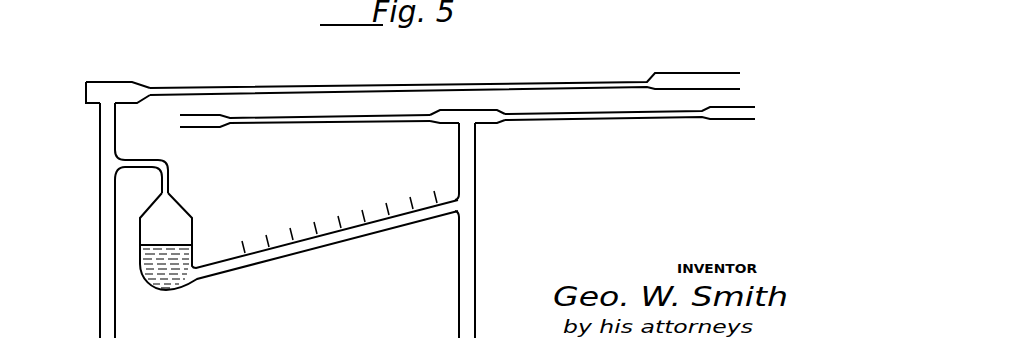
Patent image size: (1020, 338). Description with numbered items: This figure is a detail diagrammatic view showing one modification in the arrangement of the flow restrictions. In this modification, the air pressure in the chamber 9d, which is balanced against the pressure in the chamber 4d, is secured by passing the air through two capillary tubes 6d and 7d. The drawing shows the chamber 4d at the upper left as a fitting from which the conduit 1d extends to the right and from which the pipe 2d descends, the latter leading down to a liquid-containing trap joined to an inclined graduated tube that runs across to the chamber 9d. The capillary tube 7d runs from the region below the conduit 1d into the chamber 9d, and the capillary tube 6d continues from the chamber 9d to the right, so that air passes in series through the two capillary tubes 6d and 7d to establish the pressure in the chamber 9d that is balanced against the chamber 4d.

The main conduit tube 1d is at (493, 81).
The vertical drain pipe with trap 2d is at (86, 90).
The chamber 4d is at (120, 87).
The capillary tube 6d is at (570, 118).
The capillary tube 7d is at (318, 122).
The chamber 9d is at (447, 119).